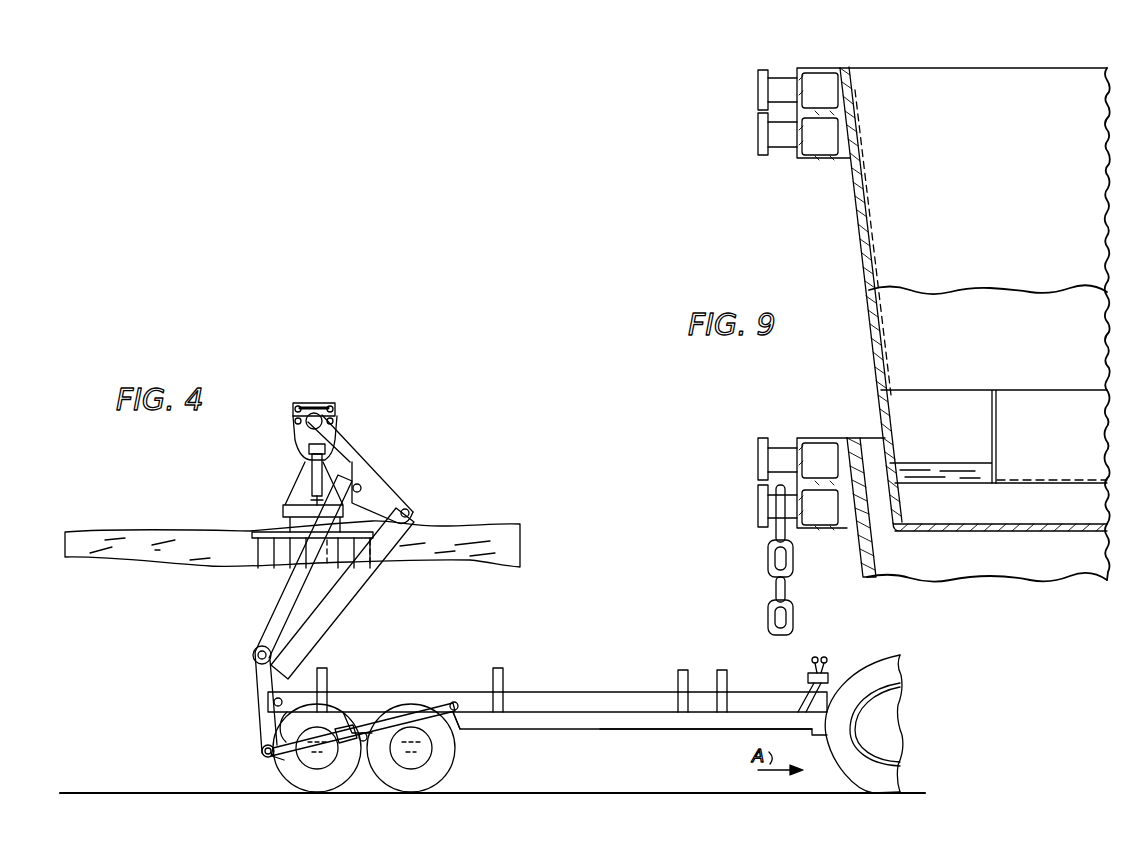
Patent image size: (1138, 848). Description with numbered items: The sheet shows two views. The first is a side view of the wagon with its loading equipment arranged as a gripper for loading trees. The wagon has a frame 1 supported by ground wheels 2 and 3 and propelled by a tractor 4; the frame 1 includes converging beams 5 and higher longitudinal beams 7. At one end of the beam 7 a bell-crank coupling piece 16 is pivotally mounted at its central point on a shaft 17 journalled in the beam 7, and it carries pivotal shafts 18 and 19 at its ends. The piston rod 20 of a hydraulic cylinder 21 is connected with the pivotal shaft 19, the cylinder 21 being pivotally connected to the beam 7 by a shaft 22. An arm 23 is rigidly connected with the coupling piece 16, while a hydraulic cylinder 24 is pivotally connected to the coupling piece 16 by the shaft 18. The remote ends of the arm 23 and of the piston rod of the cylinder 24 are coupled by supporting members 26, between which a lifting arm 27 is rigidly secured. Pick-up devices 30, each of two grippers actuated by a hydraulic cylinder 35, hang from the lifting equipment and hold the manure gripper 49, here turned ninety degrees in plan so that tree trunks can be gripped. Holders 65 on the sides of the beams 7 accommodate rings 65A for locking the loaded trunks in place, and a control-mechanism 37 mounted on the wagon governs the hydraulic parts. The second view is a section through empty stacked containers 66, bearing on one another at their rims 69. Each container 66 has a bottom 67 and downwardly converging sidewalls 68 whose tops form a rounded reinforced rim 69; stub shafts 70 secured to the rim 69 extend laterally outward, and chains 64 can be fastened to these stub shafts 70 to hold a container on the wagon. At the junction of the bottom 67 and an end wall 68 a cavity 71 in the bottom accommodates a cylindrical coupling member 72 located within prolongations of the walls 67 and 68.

In FIG. 4, the frame 1 is at (576, 730).
In FIG. 4, the ground wheel 2 is at (446, 771).
In FIG. 4, the ground wheel 3 is at (340, 776).
In FIG. 4, the tractor 4 is at (902, 740).
In FIG. 4, the beam 5 is at (688, 730).
In FIG. 4, the longitudinal beam 7 is at (600, 698).
In FIG. 4, the bell-crank coupling piece 16 is at (258, 683).
In FIG. 4, the shaft 17 is at (274, 703).
In FIG. 4, the pivotal shaft 18 is at (253, 657).
In FIG. 4, the pivotal shaft 19 is at (262, 752).
In FIG. 4, the piston rod 20 is at (283, 758).
In FIG. 4, the hydraulic cylinder 21 is at (414, 708).
In FIG. 4, the shaft 22 is at (456, 702).
In FIG. 4, the arm 23 is at (340, 606).
In FIG. 4, the hydraulic cylinder 24 is at (280, 608).
In FIG. 4, the supporting member 26 is at (380, 478).
In FIG. 4, the lifting arm 27 is at (345, 440).
In FIG. 4, the pick-up device 30 is at (296, 442).
In FIG. 4, the hydraulic cylinder 35 is at (312, 403).
In FIG. 4, the control-mechanism 37 is at (808, 678).
In FIG. 4, the gripper 49 is at (283, 565).
In FIG. 4, the holder 65 is at (505, 706).
In FIG. 4, the ring 65A is at (498, 668).
In FIG. 9, the chain 64 is at (772, 562).
In FIG. 9, the container 66 is at (845, 221).
In FIG. 9, the bottom 67 is at (1012, 528).
In FIG. 9, the sidewall 68 is at (864, 265).
In FIG. 9, the rim 69 is at (835, 70).
In FIG. 9, the stub shaft 70 is at (768, 130).
In FIG. 9, the cavity 71 is at (903, 407).
In FIG. 9, the cylindrical coupling member 72 is at (950, 478).